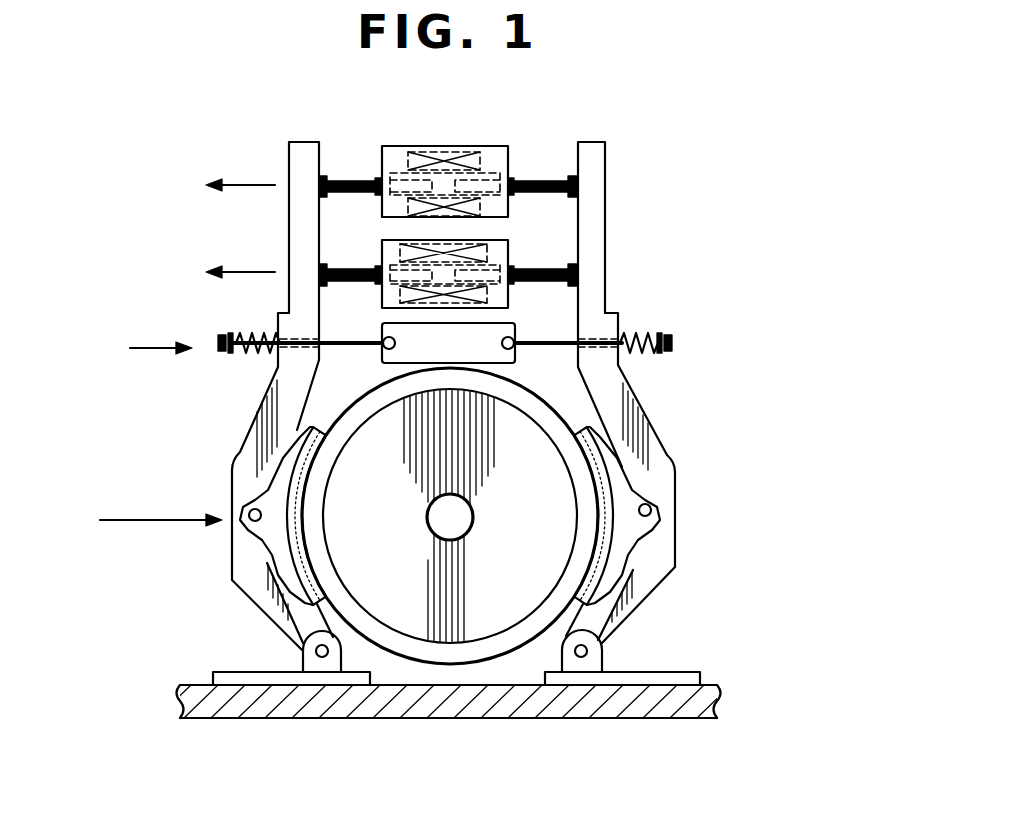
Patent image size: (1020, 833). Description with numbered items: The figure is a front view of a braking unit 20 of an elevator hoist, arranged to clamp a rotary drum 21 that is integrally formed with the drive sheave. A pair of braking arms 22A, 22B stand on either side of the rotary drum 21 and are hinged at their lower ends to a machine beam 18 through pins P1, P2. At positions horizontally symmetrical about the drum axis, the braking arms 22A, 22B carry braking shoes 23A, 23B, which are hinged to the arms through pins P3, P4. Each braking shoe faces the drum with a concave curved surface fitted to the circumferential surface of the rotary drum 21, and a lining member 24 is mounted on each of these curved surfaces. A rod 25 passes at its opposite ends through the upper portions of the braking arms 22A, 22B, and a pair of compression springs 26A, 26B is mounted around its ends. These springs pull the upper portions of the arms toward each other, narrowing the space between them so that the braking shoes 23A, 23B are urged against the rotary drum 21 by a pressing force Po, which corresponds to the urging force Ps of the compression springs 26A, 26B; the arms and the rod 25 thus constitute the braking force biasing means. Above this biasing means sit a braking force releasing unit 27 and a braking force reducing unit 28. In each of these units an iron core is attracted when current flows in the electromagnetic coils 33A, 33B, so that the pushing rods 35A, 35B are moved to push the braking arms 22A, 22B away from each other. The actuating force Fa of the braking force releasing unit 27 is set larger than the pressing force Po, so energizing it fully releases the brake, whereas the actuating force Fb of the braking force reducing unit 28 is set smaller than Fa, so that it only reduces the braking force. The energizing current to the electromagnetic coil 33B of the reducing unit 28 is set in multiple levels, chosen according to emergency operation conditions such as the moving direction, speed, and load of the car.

The machine beam 18 is at (720, 700).
The braking unit 20 is at (678, 195).
The rotary drum 21 is at (390, 396).
The braking arm 22A is at (655, 585).
The braking arm 22B is at (262, 598).
The braking shoe 23A is at (627, 481).
The braking shoe 23B is at (270, 472).
The lining member 24 is at (327, 597).
The rod 25 is at (527, 347).
The compression spring 26A is at (642, 334).
The compression spring 26B is at (248, 335).
The braking force releasing unit 27 is at (508, 296).
The braking force reducing unit 28 is at (405, 146).
The electromagnetic coil 33A is at (470, 246).
The electromagnetic coil 33B is at (438, 152).
The pushing rod 35A is at (352, 267).
The pushing rod 35B is at (352, 178).
The pin P1 is at (592, 652).
The pin P2 is at (310, 652).
The pin P3 is at (652, 512).
The pin P4 is at (249, 521).
The urging force Ps is at (155, 334).
The pressing force Po is at (161, 506).
The actuating force Fa is at (240, 257).
The actuating force Fb is at (240, 169).